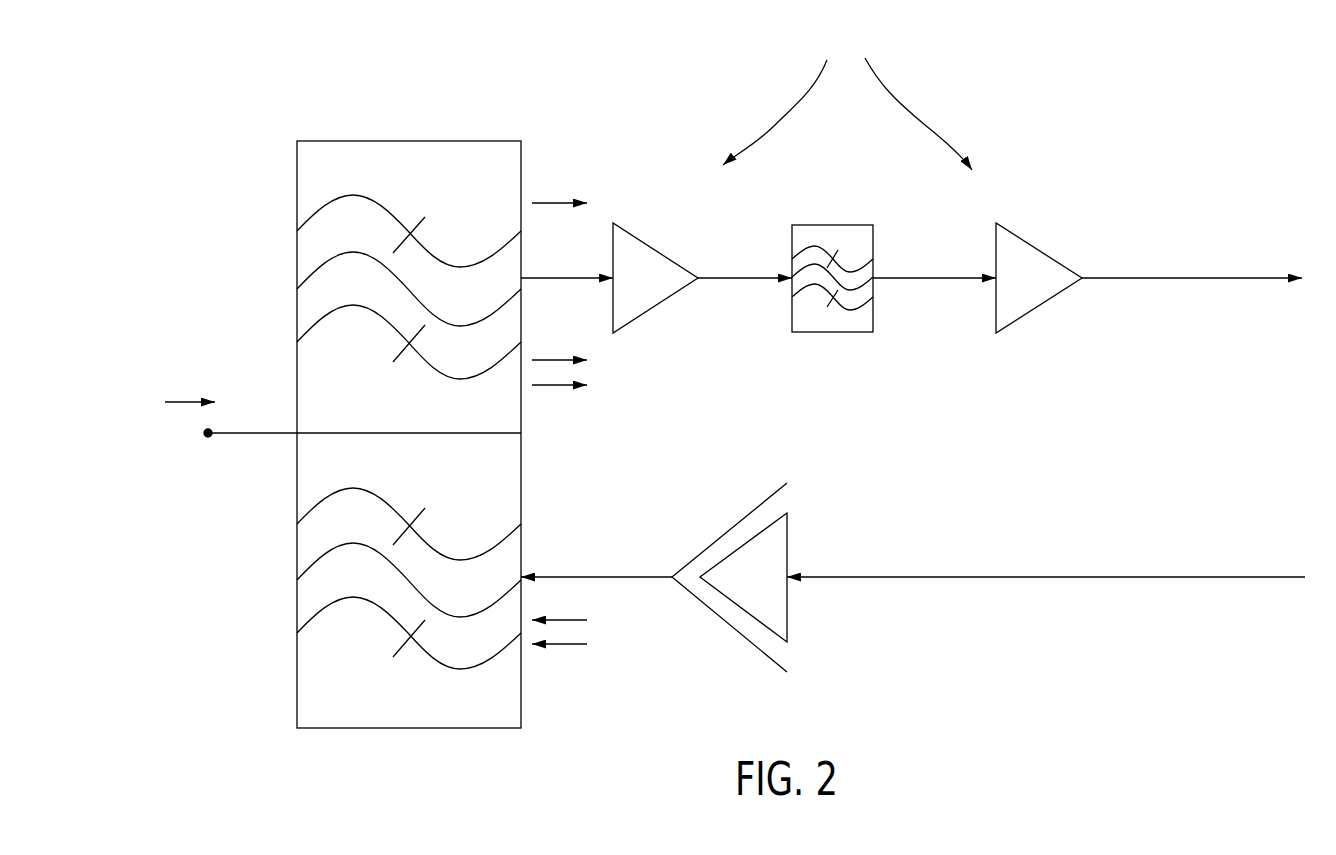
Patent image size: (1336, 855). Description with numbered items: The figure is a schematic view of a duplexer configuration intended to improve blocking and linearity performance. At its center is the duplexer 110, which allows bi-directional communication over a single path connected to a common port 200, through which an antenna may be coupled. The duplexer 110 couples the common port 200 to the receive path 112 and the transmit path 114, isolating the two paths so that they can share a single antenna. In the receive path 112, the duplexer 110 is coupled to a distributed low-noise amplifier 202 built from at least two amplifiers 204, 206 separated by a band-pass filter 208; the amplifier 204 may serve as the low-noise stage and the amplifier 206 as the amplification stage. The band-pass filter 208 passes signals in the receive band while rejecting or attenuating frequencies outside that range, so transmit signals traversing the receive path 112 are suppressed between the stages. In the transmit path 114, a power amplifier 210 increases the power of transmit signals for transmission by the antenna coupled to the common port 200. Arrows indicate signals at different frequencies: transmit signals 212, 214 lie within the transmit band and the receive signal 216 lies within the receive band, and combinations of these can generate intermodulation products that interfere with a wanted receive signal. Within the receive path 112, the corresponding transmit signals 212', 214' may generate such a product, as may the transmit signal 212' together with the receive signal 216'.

The duplexer 110 is at (478, 139).
The receive path 112 is at (1195, 275).
The transmit path 114 is at (1168, 575).
The common port 200 is at (205, 447).
The distributed low-noise amplifier 202 is at (847, 96).
The amplifier 204 is at (648, 242).
The amplifier 206 is at (1035, 242).
The band-pass filter 208 is at (833, 225).
The power amplifier 210 is at (720, 535).
The transmit signal 212 is at (583, 602).
The transmit signal 212' is at (569, 341).
The transmit signal 214 is at (583, 663).
The transmit signal 214' is at (571, 404).
The receive signal 216 is at (205, 383).
The receive signal 216' is at (576, 182).